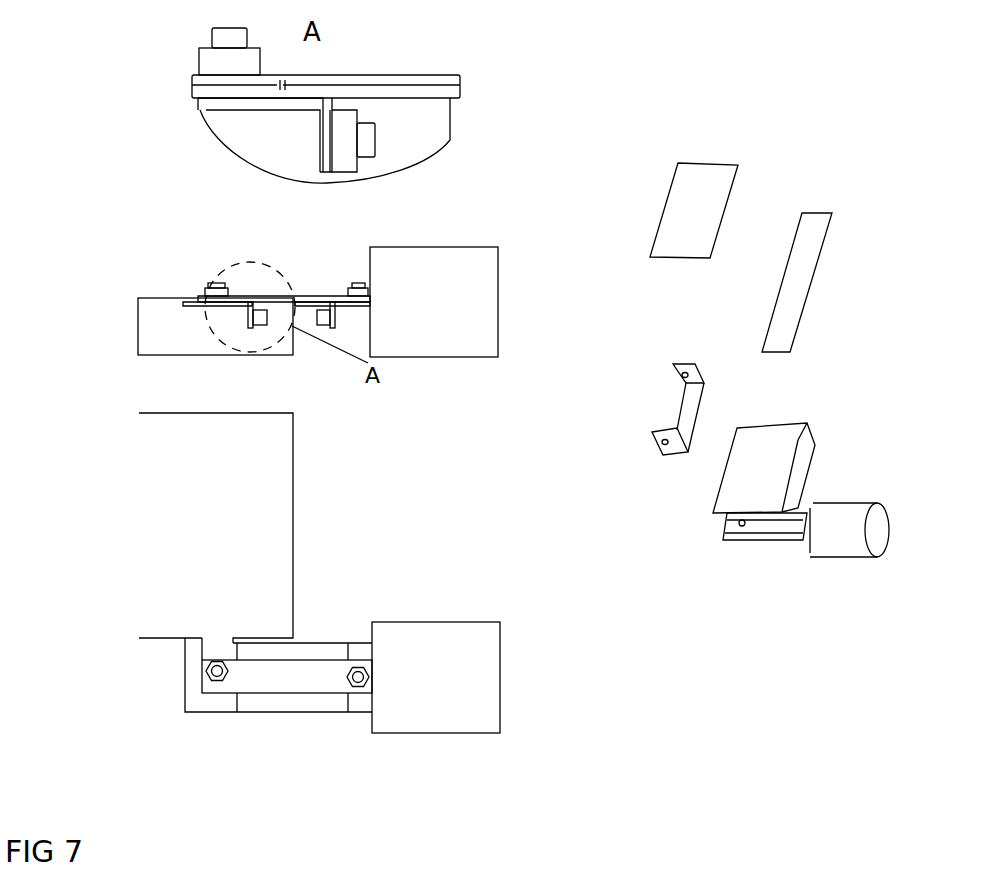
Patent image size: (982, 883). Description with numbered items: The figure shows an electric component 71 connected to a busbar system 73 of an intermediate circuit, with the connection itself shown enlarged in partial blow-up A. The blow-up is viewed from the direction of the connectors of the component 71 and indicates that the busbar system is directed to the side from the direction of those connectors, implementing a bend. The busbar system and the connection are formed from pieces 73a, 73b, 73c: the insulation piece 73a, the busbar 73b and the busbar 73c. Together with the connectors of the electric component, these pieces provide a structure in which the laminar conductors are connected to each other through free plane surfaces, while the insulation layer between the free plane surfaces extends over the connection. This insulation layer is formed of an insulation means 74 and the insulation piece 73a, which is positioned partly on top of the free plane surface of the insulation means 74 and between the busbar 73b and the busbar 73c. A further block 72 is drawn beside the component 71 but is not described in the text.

The electric component 71 is at (130, 327).
The second frame member 72 is at (475, 284).
The busbar system 73 is at (314, 350).
The insulation piece 73a is at (737, 210).
The busbar 73b is at (822, 280).
The busbar 73c is at (670, 403).
The insulation means 74 is at (193, 94).